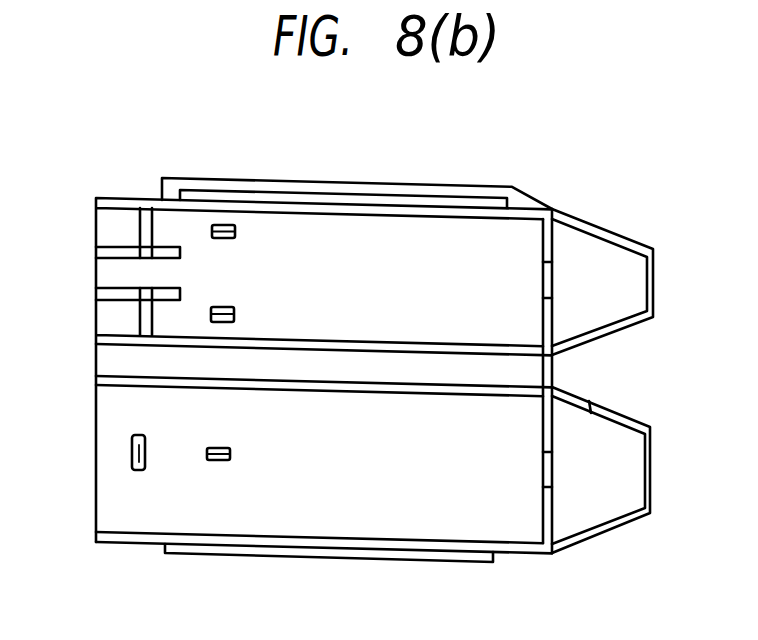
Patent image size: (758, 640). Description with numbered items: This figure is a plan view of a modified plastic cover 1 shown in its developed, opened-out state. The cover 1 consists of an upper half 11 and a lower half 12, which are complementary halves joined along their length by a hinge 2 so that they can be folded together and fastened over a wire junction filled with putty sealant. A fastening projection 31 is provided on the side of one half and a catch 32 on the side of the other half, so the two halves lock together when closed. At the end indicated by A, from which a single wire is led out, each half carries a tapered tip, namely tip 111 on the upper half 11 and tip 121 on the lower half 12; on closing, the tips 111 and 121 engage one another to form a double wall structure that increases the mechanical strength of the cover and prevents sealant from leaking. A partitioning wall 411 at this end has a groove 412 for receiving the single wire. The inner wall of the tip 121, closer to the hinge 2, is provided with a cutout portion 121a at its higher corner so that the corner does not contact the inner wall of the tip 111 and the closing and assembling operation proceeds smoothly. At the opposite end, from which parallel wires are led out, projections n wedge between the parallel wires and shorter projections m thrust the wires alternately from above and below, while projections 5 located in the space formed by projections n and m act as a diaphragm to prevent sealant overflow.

The cover 1 is at (416, 373).
The upper half 11 is at (412, 285).
The lower half 12 is at (412, 467).
The hinge 2 is at (512, 368).
The fastening projection 31 is at (355, 181).
The catch 32 is at (346, 563).
The projection 5 is at (143, 210).
The projection n is at (97, 248).
The projection m is at (220, 223).
The tip 111 is at (624, 269).
The tip 121 is at (612, 438).
The cutout portion 121a is at (573, 401).
The partitioning wall 411 is at (552, 207).
The groove 412 is at (552, 268).
The end A is at (600, 628).